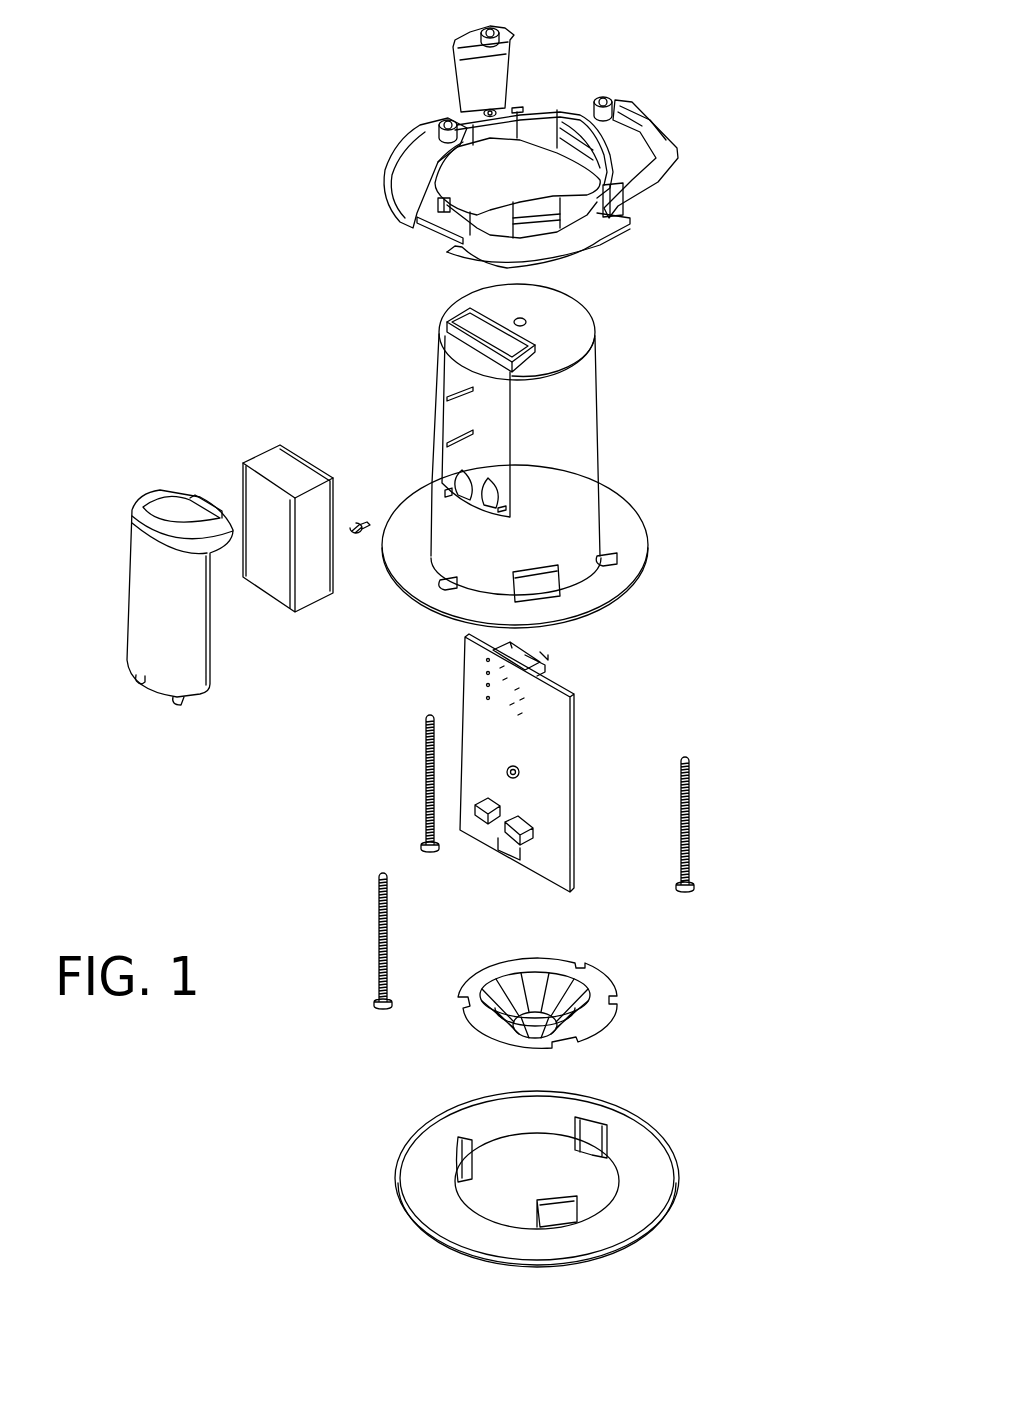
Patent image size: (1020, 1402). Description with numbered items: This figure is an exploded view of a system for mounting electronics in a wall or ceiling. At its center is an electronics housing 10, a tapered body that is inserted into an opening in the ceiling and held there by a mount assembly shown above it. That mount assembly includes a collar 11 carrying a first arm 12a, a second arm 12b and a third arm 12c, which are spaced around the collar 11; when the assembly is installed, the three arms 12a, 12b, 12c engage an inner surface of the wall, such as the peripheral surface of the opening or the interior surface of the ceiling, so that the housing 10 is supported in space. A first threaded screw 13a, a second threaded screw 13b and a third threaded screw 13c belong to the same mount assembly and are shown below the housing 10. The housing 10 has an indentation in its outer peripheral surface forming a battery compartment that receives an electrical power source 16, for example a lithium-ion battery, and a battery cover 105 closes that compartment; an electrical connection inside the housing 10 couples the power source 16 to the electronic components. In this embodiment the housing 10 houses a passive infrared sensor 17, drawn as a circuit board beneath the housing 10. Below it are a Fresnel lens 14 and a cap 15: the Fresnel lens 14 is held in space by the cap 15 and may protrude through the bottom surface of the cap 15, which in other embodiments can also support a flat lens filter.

The electronics housing 10 is at (592, 394).
The collar 11 is at (551, 110).
The first arm 12a is at (653, 130).
The second arm 12b is at (413, 150).
The third arm 12c is at (460, 89).
The first threaded screw 13a is at (693, 807).
The second threaded screw 13b is at (373, 918).
The third threaded screw 13c is at (417, 762).
The Fresnel lens 14 is at (612, 1023).
The cap 15 is at (643, 1121).
The electrical power source 16 is at (253, 452).
The passive infrared (PIR) sensor 17 is at (572, 767).
The battery cover 105 is at (135, 572).